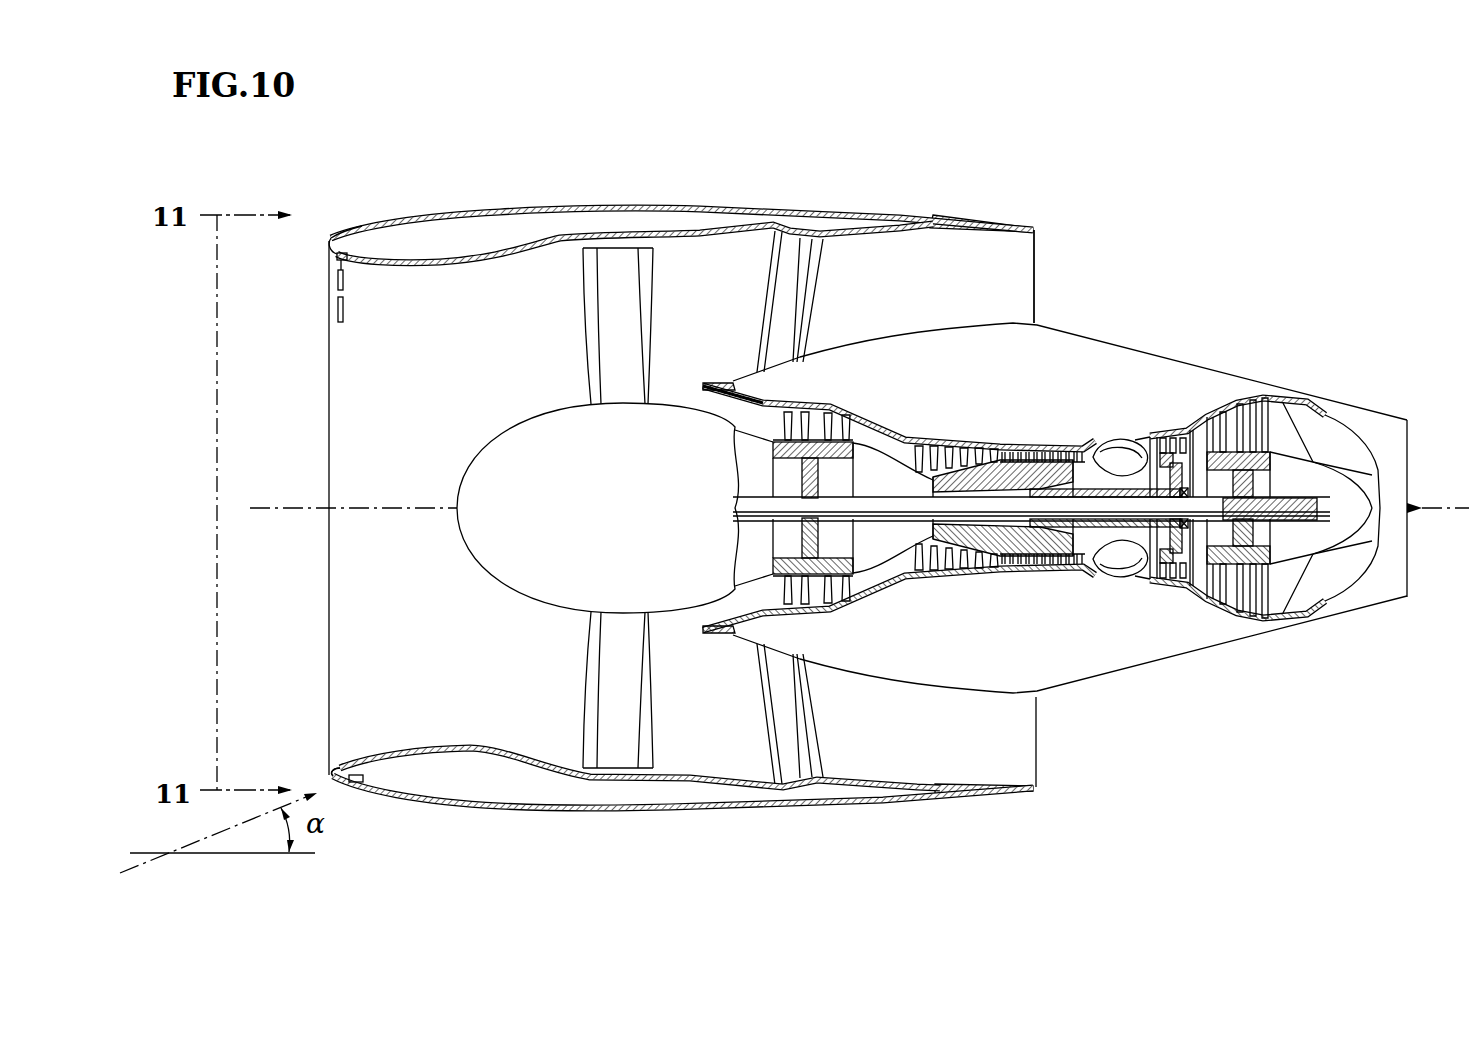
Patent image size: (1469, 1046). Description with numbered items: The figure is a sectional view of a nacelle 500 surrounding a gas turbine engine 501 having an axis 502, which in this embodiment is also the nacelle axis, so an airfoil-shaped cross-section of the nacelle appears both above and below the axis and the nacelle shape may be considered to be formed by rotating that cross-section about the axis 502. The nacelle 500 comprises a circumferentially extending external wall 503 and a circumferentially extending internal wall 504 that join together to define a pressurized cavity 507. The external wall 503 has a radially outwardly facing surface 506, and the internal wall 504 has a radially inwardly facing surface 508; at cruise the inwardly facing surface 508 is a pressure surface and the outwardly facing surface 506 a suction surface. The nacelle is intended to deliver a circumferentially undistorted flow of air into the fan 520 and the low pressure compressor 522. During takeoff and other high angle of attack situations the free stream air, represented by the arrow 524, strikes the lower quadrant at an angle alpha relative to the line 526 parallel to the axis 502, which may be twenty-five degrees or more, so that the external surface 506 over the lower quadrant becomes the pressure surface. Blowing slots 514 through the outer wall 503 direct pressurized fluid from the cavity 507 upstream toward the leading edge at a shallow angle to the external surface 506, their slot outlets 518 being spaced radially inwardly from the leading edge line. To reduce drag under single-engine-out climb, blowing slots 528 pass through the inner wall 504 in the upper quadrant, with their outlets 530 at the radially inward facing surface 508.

The nacelle 500 is at (644, 481).
The gas turbine engine 501 is at (1057, 357).
The axis 502 is at (300, 498).
The external wall 503 is at (407, 222).
The internal wall 504 is at (407, 266).
The radially outwardly facing surface 506 is at (435, 214).
The pressurized cavity 507 is at (535, 223).
The radially inwardly facing surface 508 is at (463, 261).
The blowing slots 514 is at (365, 779).
The slot outlets 518 is at (334, 783).
The fan 520 is at (570, 377).
The low pressure compressor 522 is at (744, 415).
The arrow 524 is at (233, 827).
The line 526 is at (253, 855).
The blowing slots 528 is at (360, 255).
The outlets 530 is at (337, 303).